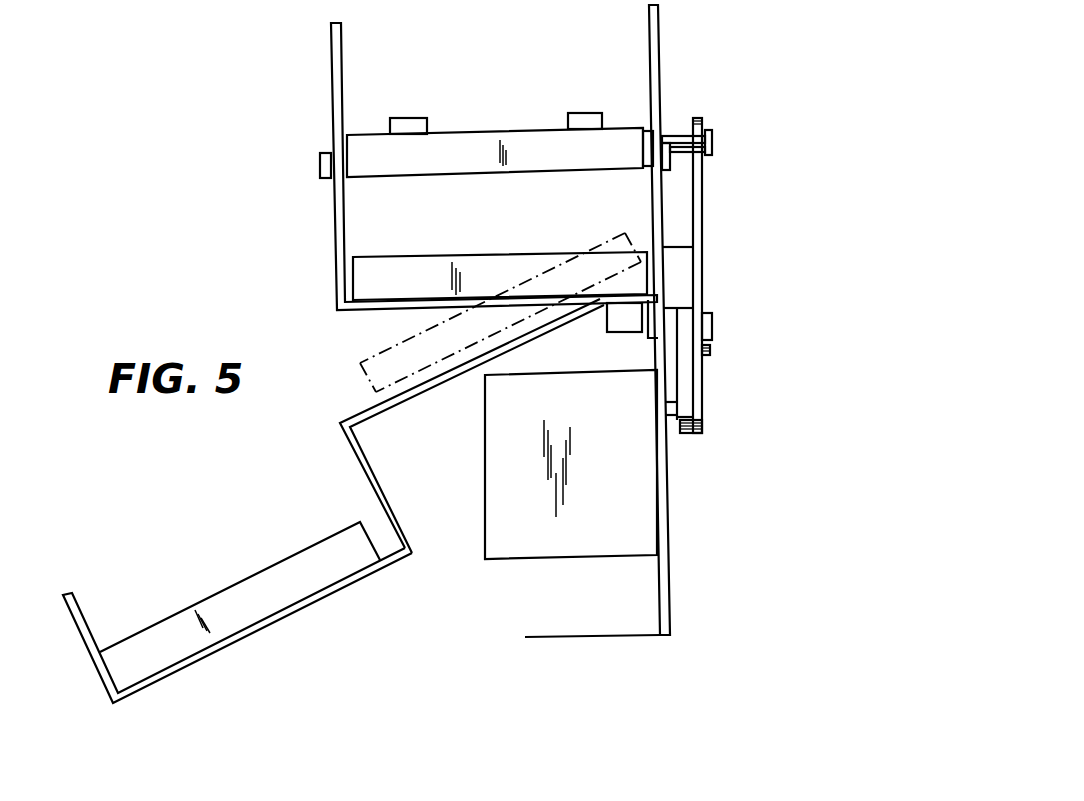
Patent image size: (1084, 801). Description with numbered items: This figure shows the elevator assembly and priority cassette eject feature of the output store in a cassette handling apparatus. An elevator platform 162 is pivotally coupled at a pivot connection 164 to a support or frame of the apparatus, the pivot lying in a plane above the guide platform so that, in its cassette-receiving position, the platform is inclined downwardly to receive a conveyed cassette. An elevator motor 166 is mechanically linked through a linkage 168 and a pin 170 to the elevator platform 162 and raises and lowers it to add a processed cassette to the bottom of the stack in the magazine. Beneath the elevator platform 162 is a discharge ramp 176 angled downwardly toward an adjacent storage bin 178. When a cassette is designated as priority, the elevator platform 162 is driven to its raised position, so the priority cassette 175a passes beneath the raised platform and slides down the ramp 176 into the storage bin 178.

The elevator platform 162 is at (445, 178).
The pivot connection 164 is at (318, 178).
The elevator motor 166 is at (560, 553).
The linkage 168 is at (706, 229).
The pin 170 is at (677, 137).
The priority cassette 175a is at (374, 391).
The discharge ramp 176 is at (386, 410).
The storage bin 178 is at (280, 560).